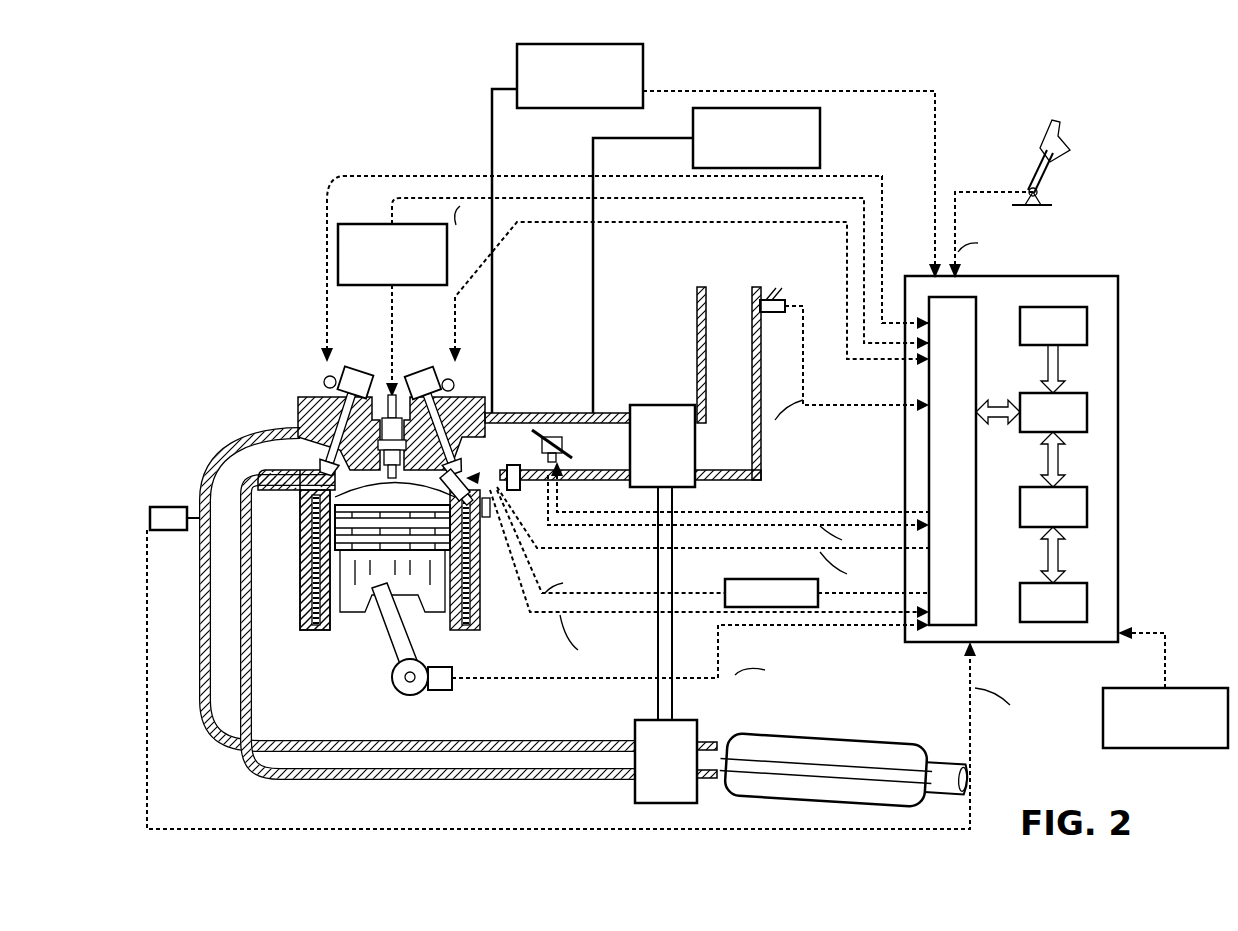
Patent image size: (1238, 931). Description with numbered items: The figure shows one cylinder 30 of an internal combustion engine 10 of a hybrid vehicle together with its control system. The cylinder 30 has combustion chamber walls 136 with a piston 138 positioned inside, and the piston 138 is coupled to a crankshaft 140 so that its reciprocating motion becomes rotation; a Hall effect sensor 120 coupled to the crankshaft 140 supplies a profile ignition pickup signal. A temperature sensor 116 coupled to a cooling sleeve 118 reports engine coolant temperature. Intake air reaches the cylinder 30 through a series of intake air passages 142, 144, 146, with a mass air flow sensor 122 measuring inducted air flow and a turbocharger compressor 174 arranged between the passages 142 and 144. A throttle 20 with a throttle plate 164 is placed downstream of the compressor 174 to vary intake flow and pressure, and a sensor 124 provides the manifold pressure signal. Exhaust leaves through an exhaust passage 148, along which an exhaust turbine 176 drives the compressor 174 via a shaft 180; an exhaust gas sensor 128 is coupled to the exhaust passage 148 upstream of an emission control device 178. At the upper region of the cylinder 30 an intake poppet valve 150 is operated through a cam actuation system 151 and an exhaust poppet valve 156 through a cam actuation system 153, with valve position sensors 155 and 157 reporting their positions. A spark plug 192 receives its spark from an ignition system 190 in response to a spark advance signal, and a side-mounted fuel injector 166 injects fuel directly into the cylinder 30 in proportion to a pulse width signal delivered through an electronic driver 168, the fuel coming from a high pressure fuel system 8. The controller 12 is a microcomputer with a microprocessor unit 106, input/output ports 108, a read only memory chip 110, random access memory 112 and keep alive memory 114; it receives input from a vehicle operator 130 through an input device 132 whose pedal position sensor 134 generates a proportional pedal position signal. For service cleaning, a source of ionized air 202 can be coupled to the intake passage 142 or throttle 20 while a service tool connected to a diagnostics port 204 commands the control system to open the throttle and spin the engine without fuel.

The engine 10 is at (135, 116).
The fuel system 8 is at (643, 56).
The source of ionized air 202 is at (706, 260).
The ignition system 190 is at (352, 224).
The vehicle operator 130 is at (1068, 158).
The input device 132 is at (1025, 170).
The pedal position sensor 134 is at (1045, 193).
The controller 12 is at (1051, 447).
The input/output ports 108 is at (977, 305).
The read only memory chip 110 is at (1087, 322).
The microprocessor unit 106 is at (1087, 408).
The random access memory 112 is at (1087, 500).
The keep alive memory 114 is at (1087, 597).
The electronic driver 168 is at (726, 580).
The diagnostics port 204 is at (1165, 687).
The intake air passage 142 is at (728, 383).
The mass air flow sensor 122 is at (778, 300).
The compressor 174 is at (648, 405).
The intake air passage 144 is at (557, 446).
The throttle 20 is at (540, 432).
The manifold pressure sensor 124 is at (515, 492).
The exhaust passage 148 is at (461, 605).
The exhaust gas sensor 128 is at (150, 515).
The cylinder 30 is at (300, 516).
The cam actuation system 153 is at (342, 370).
The valve position sensor 157 is at (322, 378).
The exhaust poppet valve 156 is at (302, 432).
The cam actuation system 151 is at (440, 372).
The valve position sensor 155 is at (464, 382).
The spark plug 192 is at (388, 397).
The intake poppet valve 150 is at (402, 430).
The throttle plate 164 is at (487, 425).
The intake air passage 146 is at (510, 444).
The fuel injector 166 is at (452, 480).
The piston 138 is at (376, 585).
The combustion chamber walls 136 is at (322, 628).
The crankshaft 140 is at (400, 692).
The Hall effect sensor 120 is at (447, 692).
The cooling sleeve 118 is at (487, 518).
The temperature sensor 116 is at (488, 505).
The shaft 180 is at (672, 690).
The exhaust turbine 176 is at (634, 790).
The emission control device 178 is at (885, 736).